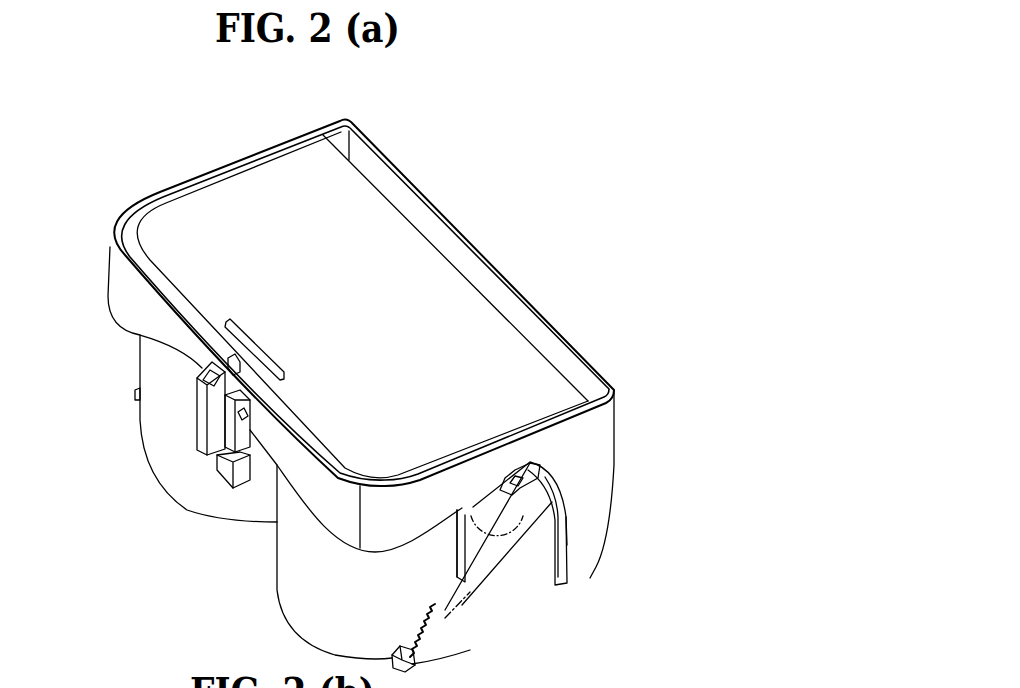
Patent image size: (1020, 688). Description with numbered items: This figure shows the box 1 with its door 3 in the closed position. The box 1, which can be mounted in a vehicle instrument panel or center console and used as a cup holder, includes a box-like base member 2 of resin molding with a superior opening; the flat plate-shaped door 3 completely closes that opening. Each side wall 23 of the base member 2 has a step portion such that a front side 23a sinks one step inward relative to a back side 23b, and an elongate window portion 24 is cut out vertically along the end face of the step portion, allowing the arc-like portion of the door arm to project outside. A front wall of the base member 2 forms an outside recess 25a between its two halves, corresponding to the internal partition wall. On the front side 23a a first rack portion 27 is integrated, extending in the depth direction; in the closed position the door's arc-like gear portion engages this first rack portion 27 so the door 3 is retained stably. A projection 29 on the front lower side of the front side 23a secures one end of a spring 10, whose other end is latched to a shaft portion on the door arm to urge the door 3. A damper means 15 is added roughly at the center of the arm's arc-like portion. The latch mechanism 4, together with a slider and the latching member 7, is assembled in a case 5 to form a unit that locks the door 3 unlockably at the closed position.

The box 1 is at (367, 303).
The base member 2 is at (518, 284).
The door 3 is at (417, 272).
The latch mechanism 4 is at (220, 468).
The case 5 is at (201, 426).
The latching member 7 is at (198, 392).
The spring 10 is at (440, 650).
The damper means 15 is at (545, 482).
The side wall 23 is at (579, 575).
The front side 23a is at (515, 583).
The back side 23b is at (583, 567).
The window portion 24 is at (568, 545).
The recess 25a is at (270, 505).
The first rack portion 27 is at (457, 555).
The projection 29 is at (407, 667).